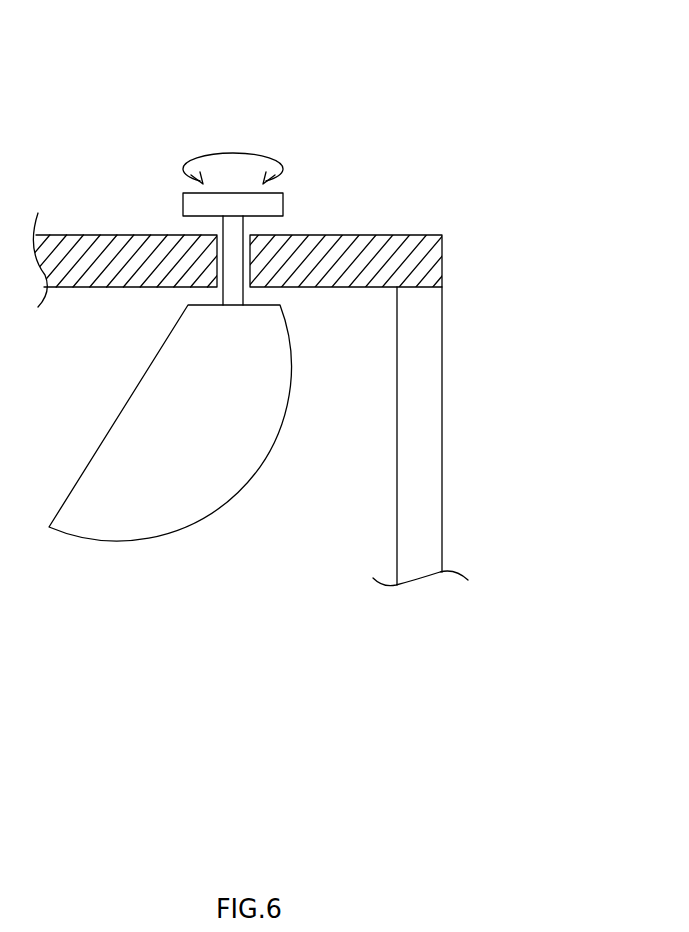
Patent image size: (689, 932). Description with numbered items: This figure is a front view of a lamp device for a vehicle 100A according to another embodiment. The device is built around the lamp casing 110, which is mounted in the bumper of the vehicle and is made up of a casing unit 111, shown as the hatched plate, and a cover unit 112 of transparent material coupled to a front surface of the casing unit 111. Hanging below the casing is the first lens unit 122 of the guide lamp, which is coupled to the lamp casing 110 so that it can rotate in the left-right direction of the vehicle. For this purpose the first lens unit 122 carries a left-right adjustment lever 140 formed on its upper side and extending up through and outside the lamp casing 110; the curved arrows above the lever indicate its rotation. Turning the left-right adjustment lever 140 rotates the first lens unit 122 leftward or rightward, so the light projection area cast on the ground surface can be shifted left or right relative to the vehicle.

The lamp device for a vehicle 100A is at (413, 121).
The lamp casing 110 is at (297, 399).
The casing unit 111 is at (428, 258).
The cover unit 112 is at (428, 337).
The first lens unit 122 is at (275, 409).
The left-right adjustment lever 140 is at (283, 207).